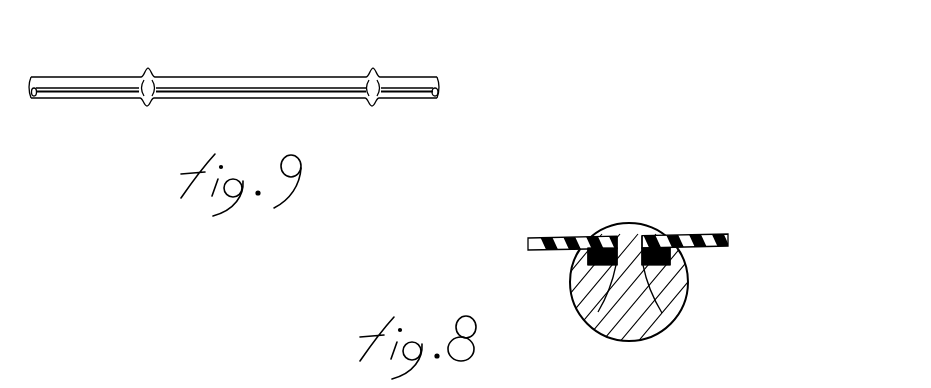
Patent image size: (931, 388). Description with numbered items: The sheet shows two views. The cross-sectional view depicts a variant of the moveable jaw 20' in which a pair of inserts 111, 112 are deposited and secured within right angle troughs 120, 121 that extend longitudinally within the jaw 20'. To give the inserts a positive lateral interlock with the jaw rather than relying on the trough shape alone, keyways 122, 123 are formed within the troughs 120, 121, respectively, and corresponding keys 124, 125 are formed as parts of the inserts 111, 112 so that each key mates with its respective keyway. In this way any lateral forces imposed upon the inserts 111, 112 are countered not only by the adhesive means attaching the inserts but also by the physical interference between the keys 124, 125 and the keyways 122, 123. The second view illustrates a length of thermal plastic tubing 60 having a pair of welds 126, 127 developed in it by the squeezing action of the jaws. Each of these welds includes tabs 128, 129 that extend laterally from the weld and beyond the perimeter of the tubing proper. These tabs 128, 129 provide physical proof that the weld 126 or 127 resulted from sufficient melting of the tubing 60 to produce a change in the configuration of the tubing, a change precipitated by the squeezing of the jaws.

In FIG. 9, the tubing 60 is at (255, 77).
In FIG. 9, the weld 126 is at (373, 106).
In FIG. 9, the weld 127 is at (154, 80).
In FIG. 9, the tab 128 is at (147, 68).
In FIG. 9, the tab 129 is at (146, 106).
In FIG. 8, the jaw 20' is at (605, 289).
In FIG. 8, the insert 111 is at (662, 233).
In FIG. 8, the insert 112 is at (595, 233).
In FIG. 8, the trough 120 is at (655, 230).
In FIG. 8, the trough 121 is at (603, 230).
In FIG. 8, the keyway 122 is at (675, 256).
In FIG. 8, the keyway 123 is at (583, 250).
In FIG. 8, the key 124 is at (662, 313).
In FIG. 8, the key 125 is at (598, 312).